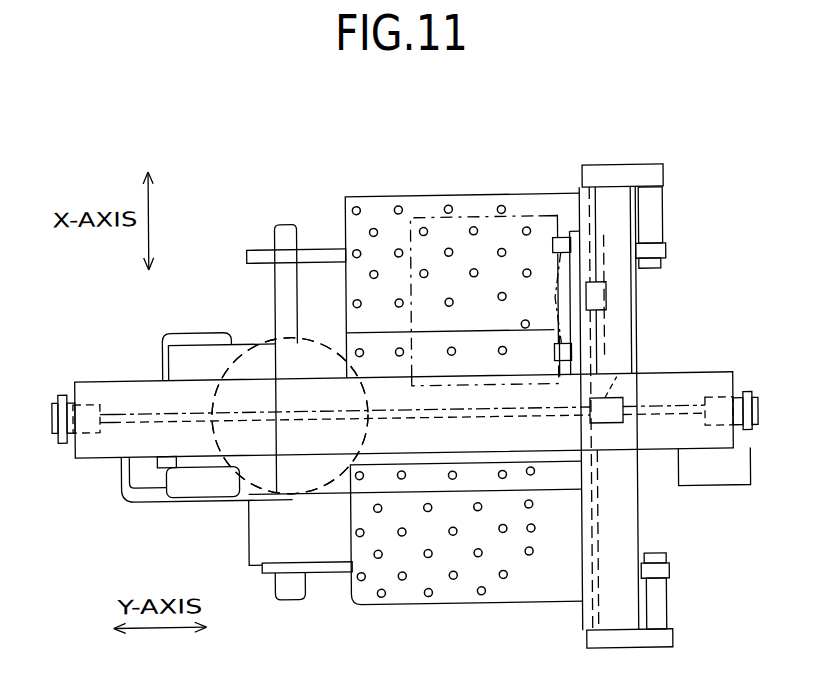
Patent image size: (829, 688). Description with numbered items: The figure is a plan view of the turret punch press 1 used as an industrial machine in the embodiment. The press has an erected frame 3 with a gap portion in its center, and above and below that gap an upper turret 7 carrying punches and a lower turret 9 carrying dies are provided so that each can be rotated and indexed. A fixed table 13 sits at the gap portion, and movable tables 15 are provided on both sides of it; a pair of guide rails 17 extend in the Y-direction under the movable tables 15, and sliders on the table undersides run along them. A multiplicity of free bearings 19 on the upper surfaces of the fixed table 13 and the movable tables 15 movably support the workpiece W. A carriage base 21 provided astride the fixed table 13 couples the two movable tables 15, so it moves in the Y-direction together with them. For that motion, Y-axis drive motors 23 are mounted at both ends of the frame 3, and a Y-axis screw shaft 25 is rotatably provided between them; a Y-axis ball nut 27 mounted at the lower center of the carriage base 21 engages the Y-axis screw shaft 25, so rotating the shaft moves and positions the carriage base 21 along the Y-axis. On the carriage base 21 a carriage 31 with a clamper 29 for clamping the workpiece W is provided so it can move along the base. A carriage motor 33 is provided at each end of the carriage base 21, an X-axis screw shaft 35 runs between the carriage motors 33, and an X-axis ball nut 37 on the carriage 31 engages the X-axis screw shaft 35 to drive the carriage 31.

The turret punch press 1 is at (308, 189).
The frame 3 is at (714, 367).
The upper turret 7 is at (238, 352).
The lower turret 9 is at (290, 381).
The fixed table 13 is at (345, 338).
The movable tables 15 is at (463, 198).
The guide rails 17 is at (262, 250).
The free bearings 19 is at (400, 205).
The carriage base 21 is at (612, 188).
The Y-axis drive motors 23 is at (55, 393).
The Y-axis screw shaft 25 is at (148, 412).
The Y-axis ball nut 27 is at (618, 379).
The clamper 29 is at (553, 302).
The carriage 31 is at (608, 335).
The carriage motors 33 is at (655, 205).
The X-axis screw shaft 35 is at (578, 222).
The X-axis ball nut 37 is at (607, 300).
The workpiece W is at (505, 207).